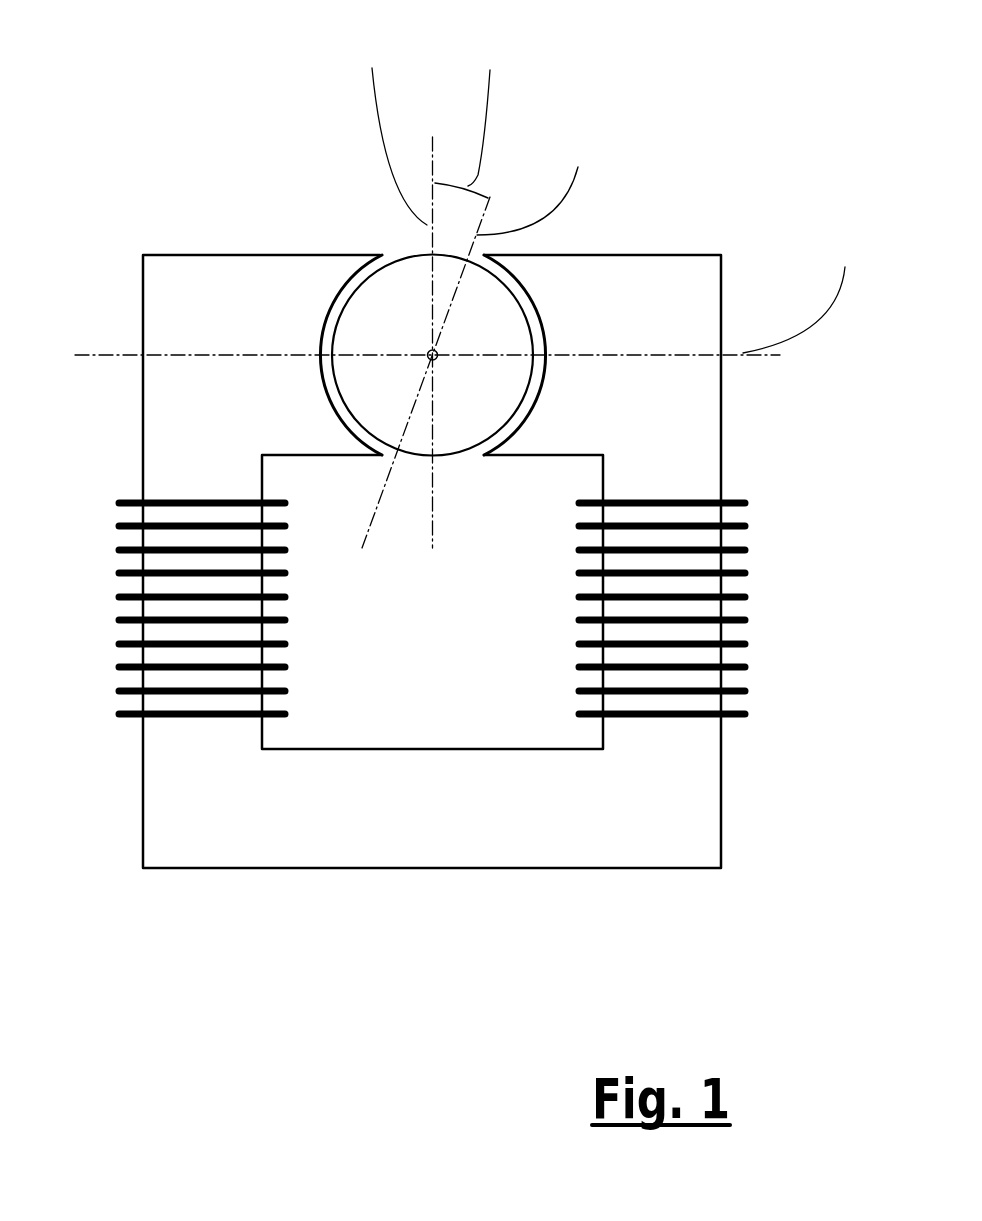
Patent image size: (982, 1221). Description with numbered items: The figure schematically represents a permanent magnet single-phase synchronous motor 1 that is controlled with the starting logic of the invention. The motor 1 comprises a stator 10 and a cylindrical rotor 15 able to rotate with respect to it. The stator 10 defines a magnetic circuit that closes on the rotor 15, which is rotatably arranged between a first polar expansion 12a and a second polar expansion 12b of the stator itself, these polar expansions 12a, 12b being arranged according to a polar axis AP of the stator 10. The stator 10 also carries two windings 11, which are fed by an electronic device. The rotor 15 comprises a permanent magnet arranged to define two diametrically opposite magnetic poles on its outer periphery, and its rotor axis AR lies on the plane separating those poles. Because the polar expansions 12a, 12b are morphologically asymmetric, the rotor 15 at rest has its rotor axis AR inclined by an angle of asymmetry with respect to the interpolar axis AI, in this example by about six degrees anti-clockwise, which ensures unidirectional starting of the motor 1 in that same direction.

The permanent magnet single-phase synchronous motor 1 is at (446, 525).
The stator 10 is at (182, 302).
The windings 11 is at (160, 547).
The first polar expansion 12a is at (317, 327).
The second polar expansion 12b is at (548, 325).
The cylindrical rotor 15 is at (413, 277).